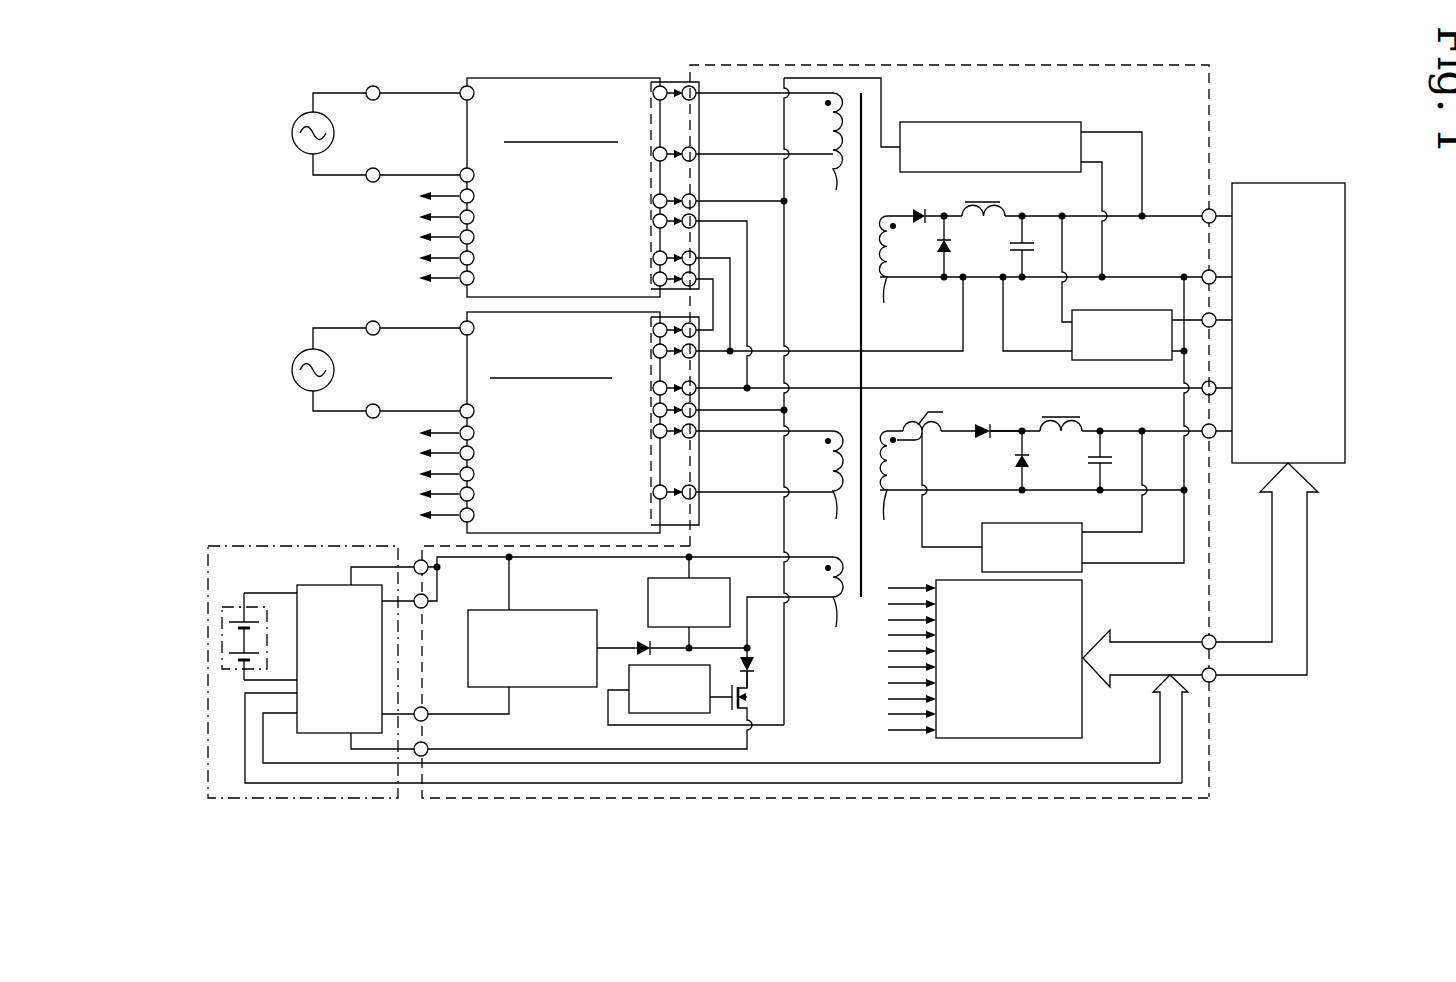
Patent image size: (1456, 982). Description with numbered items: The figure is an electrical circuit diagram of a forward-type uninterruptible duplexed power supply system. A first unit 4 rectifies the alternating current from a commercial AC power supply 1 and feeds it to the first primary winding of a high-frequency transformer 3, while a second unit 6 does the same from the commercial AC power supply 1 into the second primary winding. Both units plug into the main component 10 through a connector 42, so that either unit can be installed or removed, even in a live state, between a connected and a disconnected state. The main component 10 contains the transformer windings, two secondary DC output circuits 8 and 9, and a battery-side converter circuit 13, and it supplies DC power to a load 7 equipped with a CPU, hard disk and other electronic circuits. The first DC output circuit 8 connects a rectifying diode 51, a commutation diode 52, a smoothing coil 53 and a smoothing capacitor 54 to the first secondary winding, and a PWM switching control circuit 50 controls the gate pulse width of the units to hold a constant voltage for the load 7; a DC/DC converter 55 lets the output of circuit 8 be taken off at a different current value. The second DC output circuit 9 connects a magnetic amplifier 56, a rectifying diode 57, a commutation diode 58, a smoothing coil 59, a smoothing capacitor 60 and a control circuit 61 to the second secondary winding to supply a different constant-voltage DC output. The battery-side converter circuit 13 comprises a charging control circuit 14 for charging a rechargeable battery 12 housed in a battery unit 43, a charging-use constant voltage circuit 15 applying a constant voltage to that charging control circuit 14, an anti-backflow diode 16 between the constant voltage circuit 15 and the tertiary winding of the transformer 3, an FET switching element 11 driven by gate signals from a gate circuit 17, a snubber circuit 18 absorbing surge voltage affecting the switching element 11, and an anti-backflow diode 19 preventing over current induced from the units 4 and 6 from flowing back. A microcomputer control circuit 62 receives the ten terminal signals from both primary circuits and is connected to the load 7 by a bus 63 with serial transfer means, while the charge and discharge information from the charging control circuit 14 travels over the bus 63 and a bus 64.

The commercial AC power supply 1 is at (293, 125).
The high-frequency transformer 3 is at (862, 113).
The first unit 4 is at (470, 77).
The second unit 6 is at (468, 320).
The load 7 is at (1311, 183).
The secondary DC output circuit 8 is at (1175, 193).
The secondary DC output circuit 9 is at (1006, 413).
The main component 10 is at (1211, 86).
The switching element 11 is at (732, 716).
The rechargeable battery 12 is at (228, 605).
The battery-side converter circuit 13 is at (712, 548).
The charging control circuit 14 is at (307, 584).
The charging-use constant voltage circuit 15 is at (468, 668).
The anti-backflow diode 16 is at (640, 646).
The gate circuit 17 is at (629, 700).
The snubber circuit 18 is at (648, 587).
The anti-backflow diode 19 is at (757, 665).
The connector 42 is at (665, 76).
The battery unit 43 is at (207, 769).
The PWM switching control circuit 50 is at (1055, 122).
The rectifying diode 51 is at (916, 208).
The commutation diode 52 is at (950, 245).
The smoothing coil 53 is at (1007, 211).
The smoothing capacitor 54 is at (1016, 251).
The DC/DC converter 55 is at (1140, 310).
The magnetic amplifier 56 is at (908, 424).
The rectifying diode 57 is at (984, 440).
The commutation diode 58 is at (1030, 466).
The smoothing coil 59 is at (1088, 423).
The smoothing capacitor 60 is at (1108, 470).
The control circuit 61 is at (1085, 572).
The microcomputer control circuit 62 is at (1083, 718).
The bus 63 is at (1308, 600).
The bus 64 is at (826, 763).